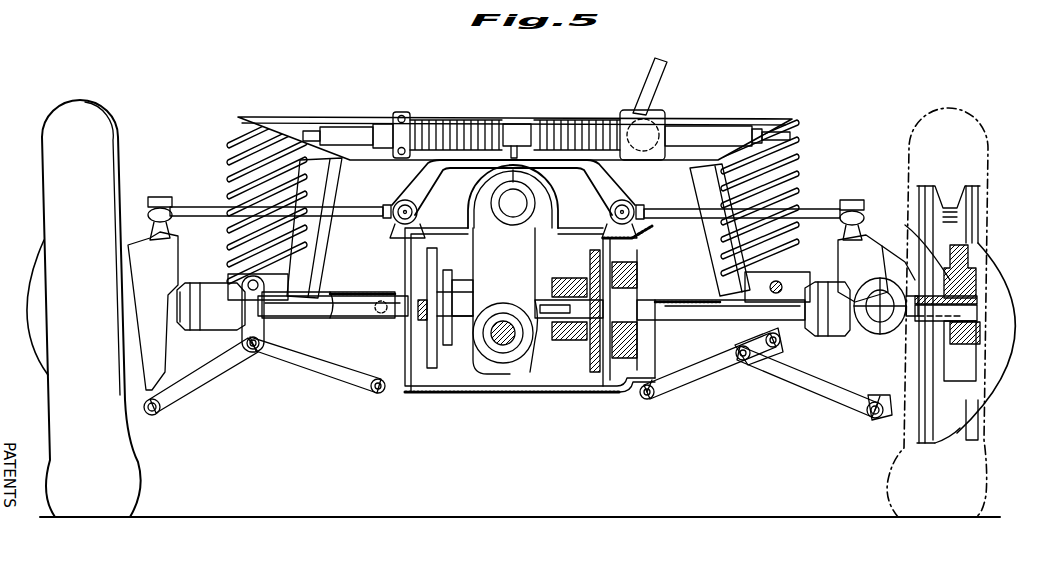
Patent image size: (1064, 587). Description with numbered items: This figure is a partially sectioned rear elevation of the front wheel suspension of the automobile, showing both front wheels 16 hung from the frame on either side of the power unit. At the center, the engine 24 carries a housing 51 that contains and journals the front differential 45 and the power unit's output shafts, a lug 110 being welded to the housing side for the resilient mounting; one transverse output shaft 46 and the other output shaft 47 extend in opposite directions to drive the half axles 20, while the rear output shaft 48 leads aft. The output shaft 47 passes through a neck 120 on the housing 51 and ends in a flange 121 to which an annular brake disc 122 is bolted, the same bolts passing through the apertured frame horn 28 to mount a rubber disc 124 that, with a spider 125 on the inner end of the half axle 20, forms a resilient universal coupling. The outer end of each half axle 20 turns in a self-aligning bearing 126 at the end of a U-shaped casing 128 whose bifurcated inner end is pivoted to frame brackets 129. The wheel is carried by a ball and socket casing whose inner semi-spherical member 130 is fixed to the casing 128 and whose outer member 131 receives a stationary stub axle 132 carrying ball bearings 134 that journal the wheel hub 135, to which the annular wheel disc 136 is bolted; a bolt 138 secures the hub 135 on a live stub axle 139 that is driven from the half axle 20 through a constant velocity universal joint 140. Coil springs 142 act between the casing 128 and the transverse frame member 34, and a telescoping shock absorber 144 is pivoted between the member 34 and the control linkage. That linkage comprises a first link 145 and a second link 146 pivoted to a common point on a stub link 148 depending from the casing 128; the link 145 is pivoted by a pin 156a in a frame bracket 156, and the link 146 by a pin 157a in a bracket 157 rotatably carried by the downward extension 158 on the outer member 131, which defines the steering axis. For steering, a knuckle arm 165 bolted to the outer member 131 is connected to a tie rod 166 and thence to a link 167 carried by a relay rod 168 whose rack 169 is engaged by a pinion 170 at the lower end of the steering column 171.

The front wheel 16 is at (58, 212).
The half axle 20 is at (352, 312).
The engine 24 is at (520, 108).
The frame horn 28 is at (418, 220).
The transverse frame member 34 is at (745, 120).
The front differential 45 is at (532, 372).
The output shaft 46 is at (437, 340).
The output shaft 47 is at (568, 295).
The rear output shaft 48 is at (500, 345).
The housing 51 is at (488, 246).
The lug 110 is at (462, 283).
The neck 120 is at (560, 332).
The end flange 121 is at (592, 358).
The brake disc 122 is at (432, 372).
The rubber disc 124 is at (392, 262).
The spider 125 is at (655, 348).
The self-aligning bearing 126 is at (830, 336).
The U-shaped casing 128 is at (318, 290).
The frame bracket 129 is at (378, 280).
The inner semi-spherical member 130 is at (185, 330).
The outer member 131 is at (152, 262).
The stationary stub axle 132 is at (905, 258).
The ball bearings 134 is at (966, 338).
The wheel hub 135 is at (978, 362).
The annular wheel disc 136 is at (972, 412).
The bolt 138 is at (988, 312).
The live stub axle 139 is at (992, 300).
The constant velocity universal joint 140 is at (876, 336).
The coil spring 142 is at (228, 184).
The shock absorber 144 is at (700, 190).
The first control link 145 is at (320, 382).
The second control link 146 is at (214, 368).
The stub link 148 is at (253, 350).
The frame bracket 156 is at (634, 396).
The pin 156a is at (650, 398).
The bracket 157 is at (138, 408).
The pin 157a is at (870, 418).
The downward extension 158 is at (866, 410).
The steering knuckle arm 165 is at (168, 244).
The tie rod 166 is at (212, 210).
The link 167 is at (600, 182).
The relay rod 168 is at (515, 128).
The rack 169 is at (622, 116).
The pinion 170 is at (655, 122).
The steering column 171 is at (660, 80).